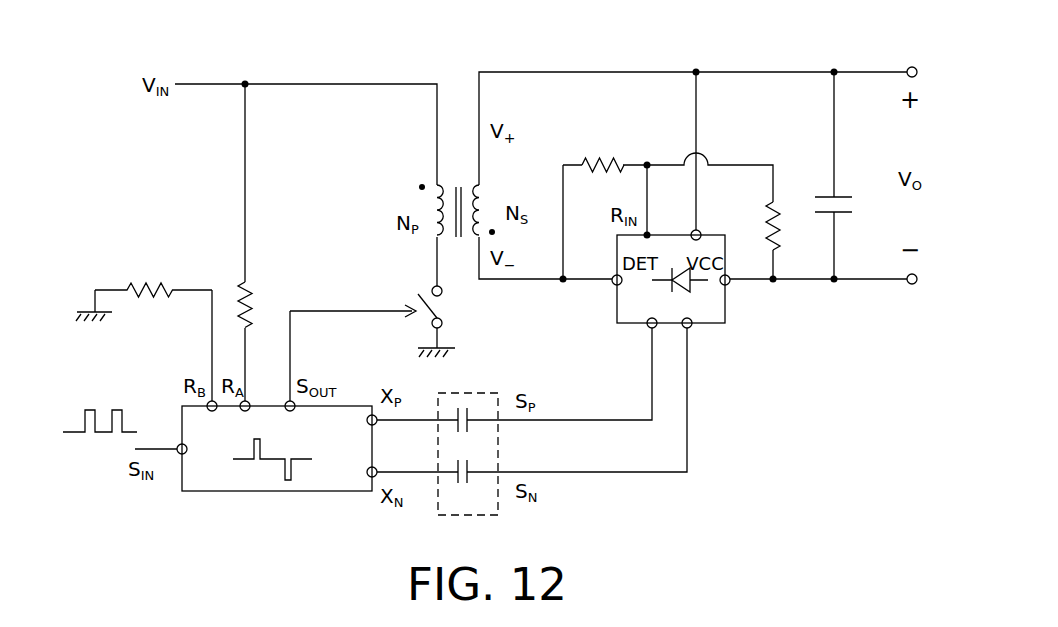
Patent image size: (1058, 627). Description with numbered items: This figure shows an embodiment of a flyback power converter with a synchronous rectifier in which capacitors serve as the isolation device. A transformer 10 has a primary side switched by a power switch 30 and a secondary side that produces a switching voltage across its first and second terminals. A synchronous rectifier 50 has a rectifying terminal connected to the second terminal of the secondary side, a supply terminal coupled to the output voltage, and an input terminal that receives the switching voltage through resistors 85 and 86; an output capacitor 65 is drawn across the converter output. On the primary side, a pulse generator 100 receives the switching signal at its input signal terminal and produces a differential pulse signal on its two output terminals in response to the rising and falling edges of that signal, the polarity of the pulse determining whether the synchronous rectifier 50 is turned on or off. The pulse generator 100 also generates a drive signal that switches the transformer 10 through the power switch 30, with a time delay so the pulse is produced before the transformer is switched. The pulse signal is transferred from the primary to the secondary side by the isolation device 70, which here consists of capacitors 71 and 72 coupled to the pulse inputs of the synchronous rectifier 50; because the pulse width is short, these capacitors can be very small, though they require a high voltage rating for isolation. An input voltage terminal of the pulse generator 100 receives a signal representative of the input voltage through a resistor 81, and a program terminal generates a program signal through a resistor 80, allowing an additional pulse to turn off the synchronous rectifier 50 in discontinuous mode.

The transformer 10 is at (419, 199).
The power switch 30 is at (443, 305).
The synchronous rectifier 50 is at (713, 306).
The output capacitor 65 is at (841, 221).
The isolation device 70 is at (462, 395).
The capacitor 71 is at (476, 430).
The capacitor 72 is at (476, 484).
The resistor 80 is at (153, 274).
The resistor 81 is at (259, 305).
The resistor 85 is at (603, 149).
The resistor 86 is at (791, 228).
The pulse generator 100 is at (192, 427).